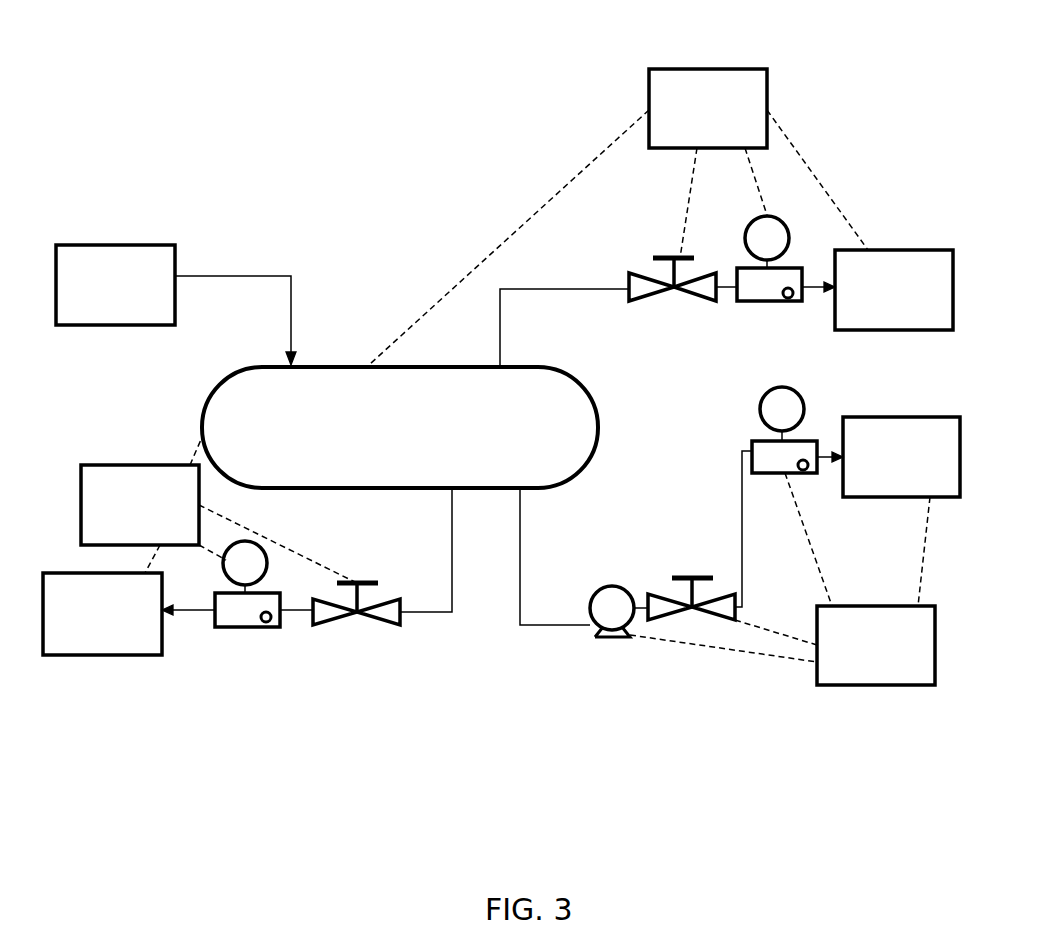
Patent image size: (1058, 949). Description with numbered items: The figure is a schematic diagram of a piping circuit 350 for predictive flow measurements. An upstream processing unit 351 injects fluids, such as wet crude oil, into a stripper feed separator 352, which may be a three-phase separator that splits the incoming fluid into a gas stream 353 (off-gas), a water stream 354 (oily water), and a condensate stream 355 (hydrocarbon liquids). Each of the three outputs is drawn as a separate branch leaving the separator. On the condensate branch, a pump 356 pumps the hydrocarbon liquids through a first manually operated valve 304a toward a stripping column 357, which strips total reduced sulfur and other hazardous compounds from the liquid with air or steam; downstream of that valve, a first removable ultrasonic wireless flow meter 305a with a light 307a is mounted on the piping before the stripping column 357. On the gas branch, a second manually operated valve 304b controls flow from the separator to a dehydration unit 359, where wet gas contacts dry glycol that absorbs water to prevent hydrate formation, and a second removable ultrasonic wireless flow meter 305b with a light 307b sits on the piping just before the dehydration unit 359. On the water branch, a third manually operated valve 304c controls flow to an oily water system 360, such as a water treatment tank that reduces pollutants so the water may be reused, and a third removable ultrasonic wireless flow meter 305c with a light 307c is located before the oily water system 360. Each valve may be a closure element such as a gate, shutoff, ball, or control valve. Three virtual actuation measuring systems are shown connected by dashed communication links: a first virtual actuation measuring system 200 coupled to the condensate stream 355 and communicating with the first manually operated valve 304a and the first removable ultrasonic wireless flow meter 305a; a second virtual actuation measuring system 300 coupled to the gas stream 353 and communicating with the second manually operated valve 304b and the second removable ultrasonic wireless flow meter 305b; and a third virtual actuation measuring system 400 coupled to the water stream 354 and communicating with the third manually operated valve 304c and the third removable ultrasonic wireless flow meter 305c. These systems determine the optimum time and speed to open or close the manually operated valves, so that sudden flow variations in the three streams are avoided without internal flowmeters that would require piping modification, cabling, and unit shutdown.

The piping circuit 350 is at (316, 92).
The upstream processing unit 351 is at (176, 305).
The stripper feed separator 352 is at (400, 427).
The gas stream 353 is at (561, 293).
The water stream 354 is at (436, 612).
The condensate stream 355 is at (522, 513).
The pump 356 is at (617, 640).
The stripping column 357 is at (901, 457).
The dehydration unit 359 is at (894, 290).
The oily water system 360 is at (102, 614).
The second virtual actuation measuring system 300 is at (708, 108).
The third virtual actuation measuring system 400 is at (140, 505).
The first virtual actuation measuring system 200 is at (876, 645).
The first manually operated valve 304a is at (678, 578).
The second manually operated valve 304b is at (676, 292).
The third manually operated valve 304c is at (360, 615).
The first removable ultrasonic wireless flow meter 305a is at (768, 425).
The second removable ultrasonic wireless flow meter 305b is at (753, 230).
The third removable ultrasonic wireless flow meter 305c is at (227, 622).
The light 307a is at (805, 470).
The light 307b is at (792, 297).
The light 307c is at (268, 625).